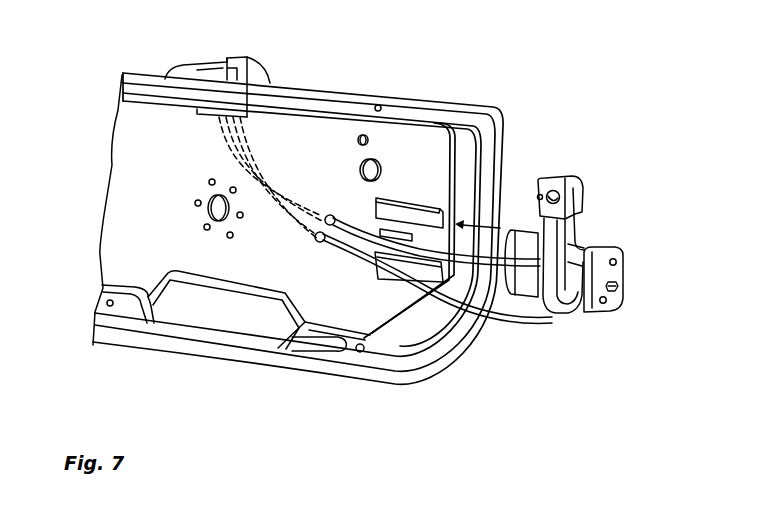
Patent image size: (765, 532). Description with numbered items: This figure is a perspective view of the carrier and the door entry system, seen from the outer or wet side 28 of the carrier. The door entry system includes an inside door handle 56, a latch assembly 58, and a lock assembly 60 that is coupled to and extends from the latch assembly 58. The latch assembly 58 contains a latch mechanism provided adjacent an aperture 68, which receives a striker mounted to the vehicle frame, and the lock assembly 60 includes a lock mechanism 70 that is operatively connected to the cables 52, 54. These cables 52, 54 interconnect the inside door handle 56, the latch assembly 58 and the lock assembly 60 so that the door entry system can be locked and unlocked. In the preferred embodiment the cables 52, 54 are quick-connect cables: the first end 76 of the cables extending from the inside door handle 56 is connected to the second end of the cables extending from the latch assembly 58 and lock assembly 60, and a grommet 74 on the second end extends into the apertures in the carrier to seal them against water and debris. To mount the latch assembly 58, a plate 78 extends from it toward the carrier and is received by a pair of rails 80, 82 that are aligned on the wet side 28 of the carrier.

The wet side surface 28 is at (150, 128).
The cable 52 is at (350, 223).
The cable 54 is at (512, 322).
The inside door handle 56 is at (238, 54).
The latch assembly 58 is at (631, 252).
The lock assembly 60 is at (563, 172).
The aperture 68 is at (624, 286).
The lock mechanism 70 is at (584, 193).
The grommet 74 is at (331, 215).
The first end of cables 76 is at (462, 378).
The plate 78 is at (523, 222).
The rail 80 is at (406, 212).
The rail 82 is at (400, 270).